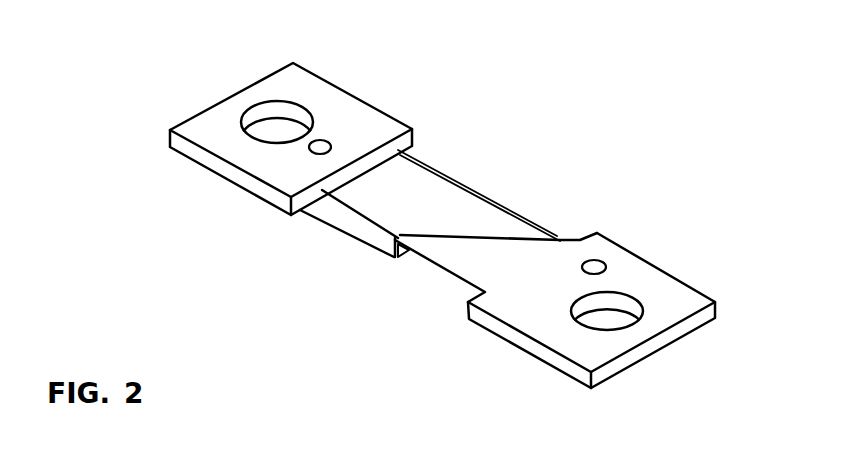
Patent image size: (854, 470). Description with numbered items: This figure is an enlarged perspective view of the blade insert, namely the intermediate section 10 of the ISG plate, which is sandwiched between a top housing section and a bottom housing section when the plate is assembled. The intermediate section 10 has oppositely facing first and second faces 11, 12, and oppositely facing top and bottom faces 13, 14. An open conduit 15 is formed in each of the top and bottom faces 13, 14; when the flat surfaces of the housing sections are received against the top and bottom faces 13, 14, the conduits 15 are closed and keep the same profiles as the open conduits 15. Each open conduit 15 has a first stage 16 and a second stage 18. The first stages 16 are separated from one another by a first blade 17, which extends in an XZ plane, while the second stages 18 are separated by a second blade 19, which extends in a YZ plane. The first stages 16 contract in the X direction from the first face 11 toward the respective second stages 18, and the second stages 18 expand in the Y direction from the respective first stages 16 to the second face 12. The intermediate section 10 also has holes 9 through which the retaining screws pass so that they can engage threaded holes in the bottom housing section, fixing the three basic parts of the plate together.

The holes 9 is at (290, 112).
The intermediate section 10 is at (706, 290).
The first face 11 is at (640, 262).
The second face 12 is at (508, 328).
The top face 13 is at (378, 123).
The bottom face 14 is at (260, 199).
The open conduit 15 is at (408, 199).
The first stage 16 is at (493, 223).
The first blade 17 is at (457, 180).
The second stage 18 is at (327, 208).
The second blade 19 is at (392, 250).